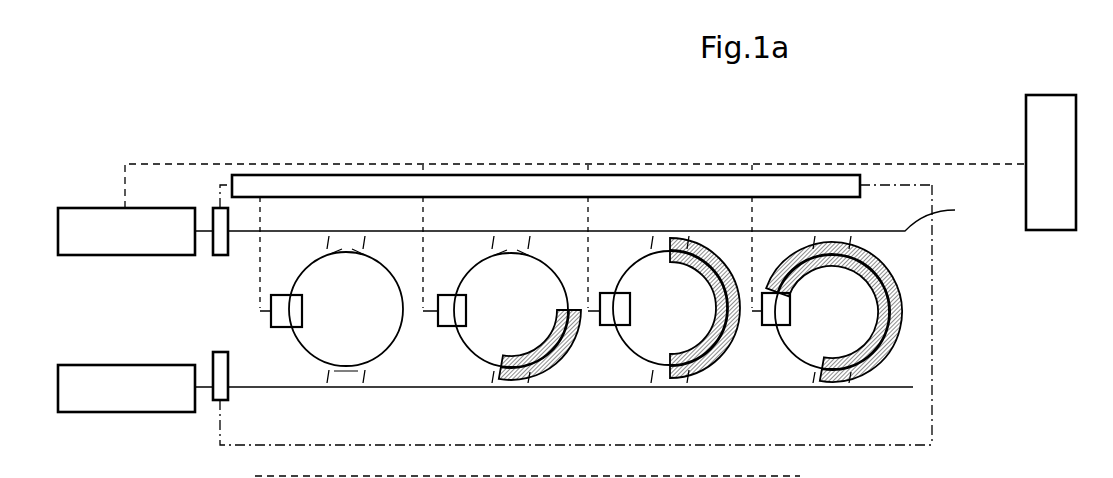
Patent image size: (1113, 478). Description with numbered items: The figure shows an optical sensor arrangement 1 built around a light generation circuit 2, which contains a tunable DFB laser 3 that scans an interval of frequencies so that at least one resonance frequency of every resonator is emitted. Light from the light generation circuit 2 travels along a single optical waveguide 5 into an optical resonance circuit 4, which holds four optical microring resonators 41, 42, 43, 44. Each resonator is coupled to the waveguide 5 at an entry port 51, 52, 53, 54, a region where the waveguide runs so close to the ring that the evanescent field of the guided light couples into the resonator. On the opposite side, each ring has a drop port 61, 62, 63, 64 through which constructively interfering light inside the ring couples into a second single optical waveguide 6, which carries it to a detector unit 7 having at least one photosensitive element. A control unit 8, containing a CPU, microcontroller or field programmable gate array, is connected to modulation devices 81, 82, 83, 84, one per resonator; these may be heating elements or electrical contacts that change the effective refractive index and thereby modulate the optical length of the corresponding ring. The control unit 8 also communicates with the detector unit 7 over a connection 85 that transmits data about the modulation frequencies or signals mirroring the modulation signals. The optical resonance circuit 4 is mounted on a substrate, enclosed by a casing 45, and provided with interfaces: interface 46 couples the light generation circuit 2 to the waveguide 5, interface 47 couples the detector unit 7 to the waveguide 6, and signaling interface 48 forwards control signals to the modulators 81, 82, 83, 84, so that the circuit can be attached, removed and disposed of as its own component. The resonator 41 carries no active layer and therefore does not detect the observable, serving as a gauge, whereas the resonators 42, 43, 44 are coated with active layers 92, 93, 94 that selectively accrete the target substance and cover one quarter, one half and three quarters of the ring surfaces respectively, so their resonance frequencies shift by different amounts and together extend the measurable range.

The optical sensor arrangement 1 is at (513, 124).
The light generation circuit 2 is at (92, 426).
The DFB laser 3 is at (155, 413).
The optical resonance circuit 4 is at (942, 292).
The single optical waveguide 5 is at (425, 388).
The single optical waveguide 6 is at (583, 215).
The detector unit 7 is at (88, 196).
The control unit 8 is at (1014, 128).
The optical microring resonator 41 is at (356, 318).
The optical microring resonator 42 is at (521, 318).
The optical microring resonator 43 is at (680, 318).
The optical microring resonator 44 is at (842, 320).
The casing 45 is at (932, 400).
The interface 46 is at (222, 392).
The interface 47 is at (213, 252).
The signaling interface 48 is at (315, 175).
The entry port 51 is at (358, 422).
The entry port 52 is at (524, 422).
The entry port 53 is at (683, 422).
The entry port 54 is at (845, 422).
The drop port 61 is at (334, 215).
The drop port 62 is at (499, 215).
The drop port 63 is at (658, 215).
The drop port 64 is at (820, 215).
The modulation device 81 is at (282, 325).
The modulation device 82 is at (447, 325).
The modulation device 83 is at (611, 324).
The modulation device 84 is at (772, 324).
The connection 85 is at (170, 163).
The active layer 92 is at (540, 345).
The active layer 93 is at (706, 308).
The active layer 94 is at (835, 312).